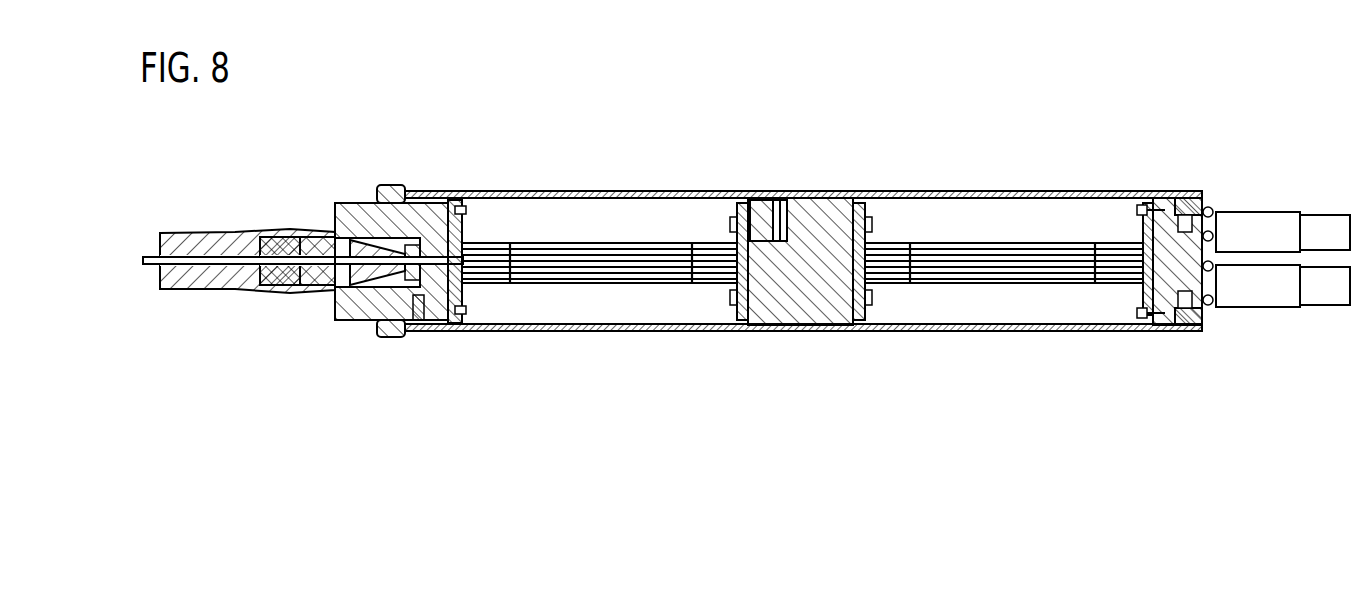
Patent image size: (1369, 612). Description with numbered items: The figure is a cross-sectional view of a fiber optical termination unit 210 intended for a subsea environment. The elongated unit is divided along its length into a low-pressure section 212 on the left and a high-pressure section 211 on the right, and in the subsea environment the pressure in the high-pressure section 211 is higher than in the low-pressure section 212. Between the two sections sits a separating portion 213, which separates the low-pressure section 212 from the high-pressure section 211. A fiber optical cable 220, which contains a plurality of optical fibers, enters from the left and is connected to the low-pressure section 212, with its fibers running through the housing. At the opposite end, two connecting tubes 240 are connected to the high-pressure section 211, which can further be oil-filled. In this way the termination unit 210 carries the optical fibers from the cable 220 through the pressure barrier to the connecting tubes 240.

The fiber optical termination unit 210 is at (768, 238).
The high-pressure section 211 is at (977, 348).
The low-pressure section 212 is at (562, 348).
The separating portion 213 is at (798, 200).
The fiber optical cable 220 is at (153, 257).
The connecting tubes 240 is at (1274, 287).